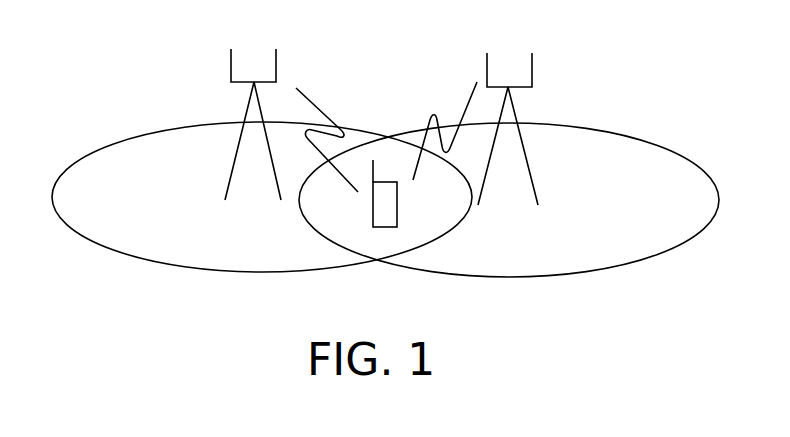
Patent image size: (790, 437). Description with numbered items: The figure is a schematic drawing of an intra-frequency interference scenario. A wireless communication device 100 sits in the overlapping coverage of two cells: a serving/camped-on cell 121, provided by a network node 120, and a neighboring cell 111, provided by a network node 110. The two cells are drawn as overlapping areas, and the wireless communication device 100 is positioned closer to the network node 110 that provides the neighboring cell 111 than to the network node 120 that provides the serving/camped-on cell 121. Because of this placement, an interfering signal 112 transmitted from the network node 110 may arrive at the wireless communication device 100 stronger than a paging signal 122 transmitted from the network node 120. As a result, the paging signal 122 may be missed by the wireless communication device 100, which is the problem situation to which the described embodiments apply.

The wireless communication device 100 is at (397, 212).
The network node 110 is at (527, 163).
The neighboring cell 111 is at (570, 276).
The interfering signal 112 is at (470, 93).
The network node 120 is at (234, 165).
The serving/camped-on cell 121 is at (150, 262).
The paging signal 122 is at (318, 104).